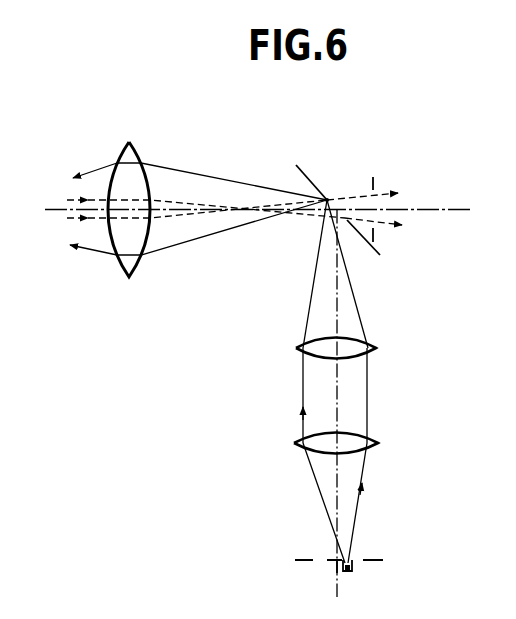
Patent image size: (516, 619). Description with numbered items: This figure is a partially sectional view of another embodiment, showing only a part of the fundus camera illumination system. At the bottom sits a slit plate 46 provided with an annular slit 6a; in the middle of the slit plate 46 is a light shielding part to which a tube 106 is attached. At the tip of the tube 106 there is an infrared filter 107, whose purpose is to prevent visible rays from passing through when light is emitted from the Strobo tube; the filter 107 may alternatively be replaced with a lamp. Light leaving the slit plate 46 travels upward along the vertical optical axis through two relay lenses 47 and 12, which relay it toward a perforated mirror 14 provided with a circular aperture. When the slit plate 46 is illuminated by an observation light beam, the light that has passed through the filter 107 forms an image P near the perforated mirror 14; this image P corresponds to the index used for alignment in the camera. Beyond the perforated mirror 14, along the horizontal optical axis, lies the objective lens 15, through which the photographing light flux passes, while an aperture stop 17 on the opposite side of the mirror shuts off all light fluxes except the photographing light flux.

The objective lens 15 is at (130, 143).
The perforated mirror 14 is at (309, 180).
The index P is at (331, 198).
The aperture stop 17 is at (374, 178).
The relay lens 12 is at (376, 348).
The relay lens 47 is at (378, 441).
The slit plate 46 is at (377, 558).
The annular slit 6a is at (358, 560).
The tube 106 is at (342, 567).
The infrared filter 107 is at (348, 571).